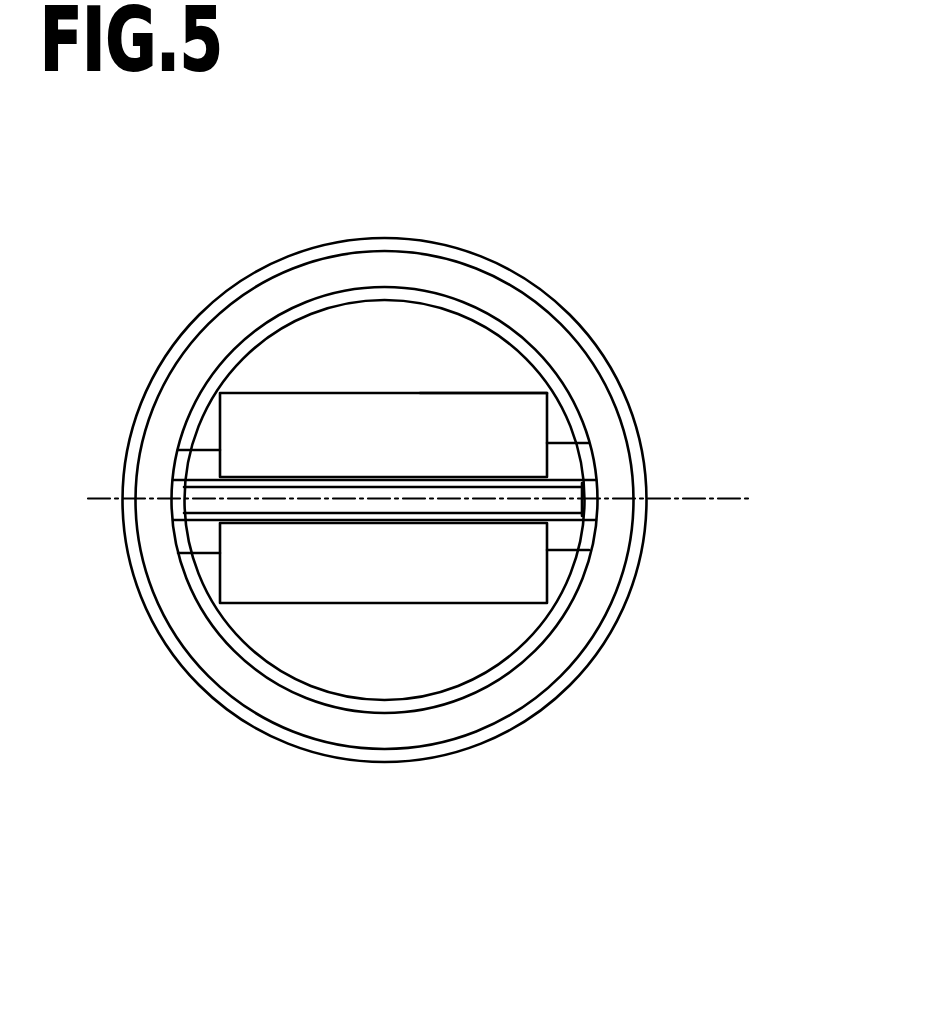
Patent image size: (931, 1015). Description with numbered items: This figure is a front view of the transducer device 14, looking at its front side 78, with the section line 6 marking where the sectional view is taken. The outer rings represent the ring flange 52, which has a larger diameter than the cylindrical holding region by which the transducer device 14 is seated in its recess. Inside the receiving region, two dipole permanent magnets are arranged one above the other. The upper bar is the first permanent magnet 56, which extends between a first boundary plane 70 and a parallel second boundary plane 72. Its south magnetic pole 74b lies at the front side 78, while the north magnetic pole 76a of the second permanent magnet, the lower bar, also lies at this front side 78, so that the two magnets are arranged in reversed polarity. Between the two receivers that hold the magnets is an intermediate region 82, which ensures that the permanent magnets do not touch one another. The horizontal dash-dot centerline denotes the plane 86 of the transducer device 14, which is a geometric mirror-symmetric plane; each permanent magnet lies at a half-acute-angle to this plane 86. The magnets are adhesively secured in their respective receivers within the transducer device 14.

The transducer device 14 is at (652, 373).
The ring flange 52 is at (229, 675).
The first permanent magnet 56 is at (420, 410).
The first boundary plane 70 is at (262, 395).
The second boundary plane 72 is at (236, 482).
The south magnetic pole 74b is at (522, 407).
The north magnetic pole 76a is at (520, 583).
The front side 78 is at (357, 412).
The intermediate region 82 is at (263, 508).
The plane 86 is at (702, 498).
The section line 6- 6 is at (378, 215).